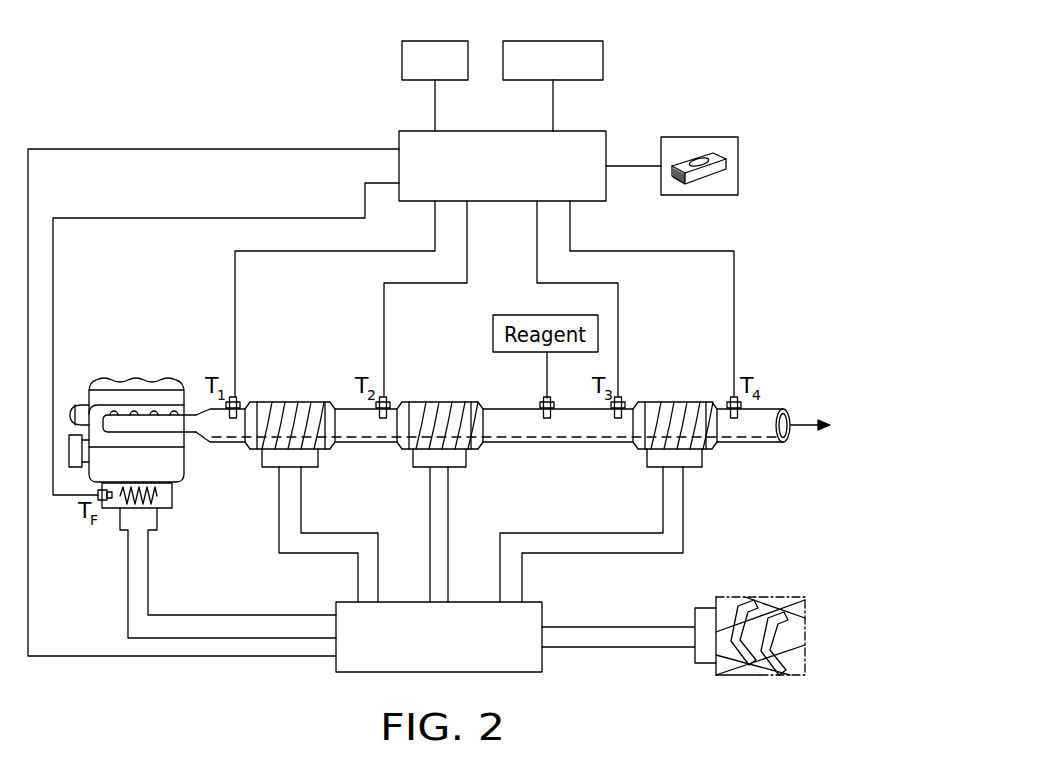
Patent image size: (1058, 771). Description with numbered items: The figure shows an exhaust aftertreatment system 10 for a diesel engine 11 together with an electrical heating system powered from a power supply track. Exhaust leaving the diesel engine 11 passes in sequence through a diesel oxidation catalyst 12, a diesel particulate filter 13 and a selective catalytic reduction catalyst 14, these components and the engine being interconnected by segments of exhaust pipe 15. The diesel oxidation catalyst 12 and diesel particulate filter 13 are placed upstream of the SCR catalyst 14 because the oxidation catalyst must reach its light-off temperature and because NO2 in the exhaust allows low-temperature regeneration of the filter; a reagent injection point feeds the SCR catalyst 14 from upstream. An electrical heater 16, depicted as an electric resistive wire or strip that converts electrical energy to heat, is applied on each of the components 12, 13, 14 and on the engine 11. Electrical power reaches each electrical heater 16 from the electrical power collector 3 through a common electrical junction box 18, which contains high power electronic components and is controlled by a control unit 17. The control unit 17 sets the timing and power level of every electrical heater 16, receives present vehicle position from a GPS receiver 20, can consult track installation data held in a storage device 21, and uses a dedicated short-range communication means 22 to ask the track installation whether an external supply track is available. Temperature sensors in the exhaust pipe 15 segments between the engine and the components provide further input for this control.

The exhaust aftertreatment system 10 is at (158, 50).
The diesel engine 11 is at (132, 395).
The diesel oxidation catalyst 12 is at (268, 405).
The diesel particulate filter 13 is at (423, 405).
The selective catalytic reduction catalyst 14 is at (655, 405).
The exhaust pipe 15 is at (213, 443).
The electrical heater 16 is at (297, 407).
The control unit 17 is at (392, 122).
The electrical junction box 18 is at (556, 668).
The GPS receiver 20 is at (402, 61).
The storage device 21 is at (738, 166).
The dedicated short-range communication means 22 is at (603, 61).
The electrical power collector 3 is at (734, 676).